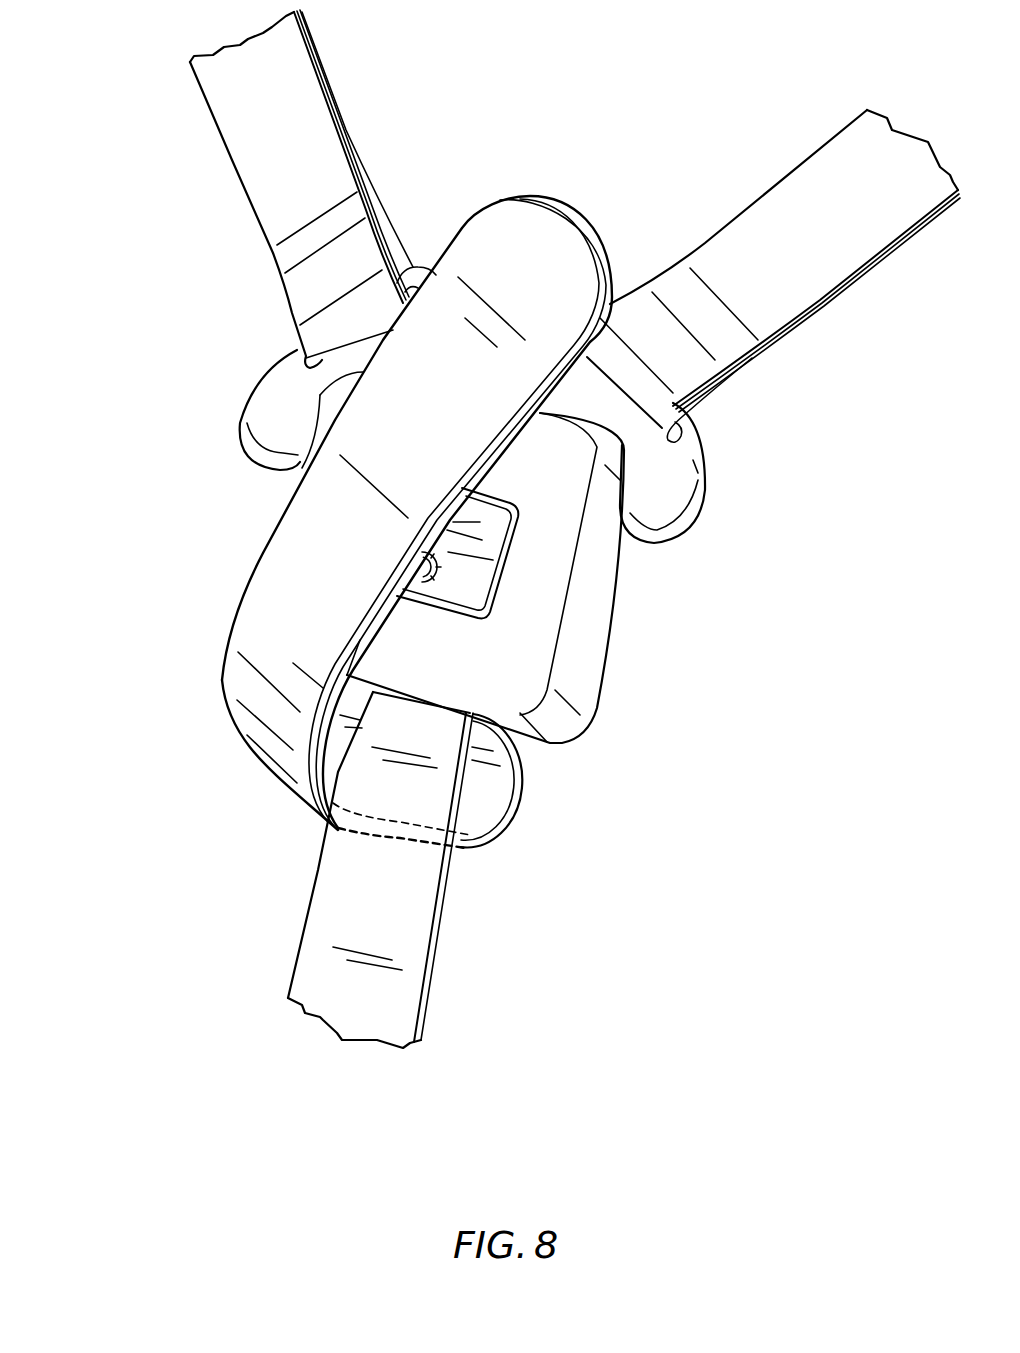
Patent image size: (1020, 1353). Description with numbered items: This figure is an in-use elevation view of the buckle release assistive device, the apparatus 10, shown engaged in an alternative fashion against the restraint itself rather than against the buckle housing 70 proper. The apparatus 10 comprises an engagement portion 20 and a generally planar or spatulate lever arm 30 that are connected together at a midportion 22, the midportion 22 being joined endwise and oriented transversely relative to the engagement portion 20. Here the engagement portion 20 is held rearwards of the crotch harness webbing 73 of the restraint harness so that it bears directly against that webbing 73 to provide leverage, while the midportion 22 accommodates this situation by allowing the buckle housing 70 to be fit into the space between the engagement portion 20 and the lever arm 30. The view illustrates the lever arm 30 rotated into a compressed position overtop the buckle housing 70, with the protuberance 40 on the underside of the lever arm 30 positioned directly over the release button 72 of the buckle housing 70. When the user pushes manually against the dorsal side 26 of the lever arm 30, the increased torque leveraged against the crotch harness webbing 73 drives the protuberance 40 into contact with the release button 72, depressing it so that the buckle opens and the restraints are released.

The apparatus 10 is at (108, 478).
The engagement portion 20 is at (335, 750).
The midportion 22 is at (273, 770).
The dorsal side 26 is at (500, 389).
The lever arm 30 is at (320, 663).
The protuberance 40 is at (410, 587).
The restraint buckle housing 70 is at (600, 608).
The release button 72 is at (470, 588).
The crotch harness webbing 73 is at (407, 868).